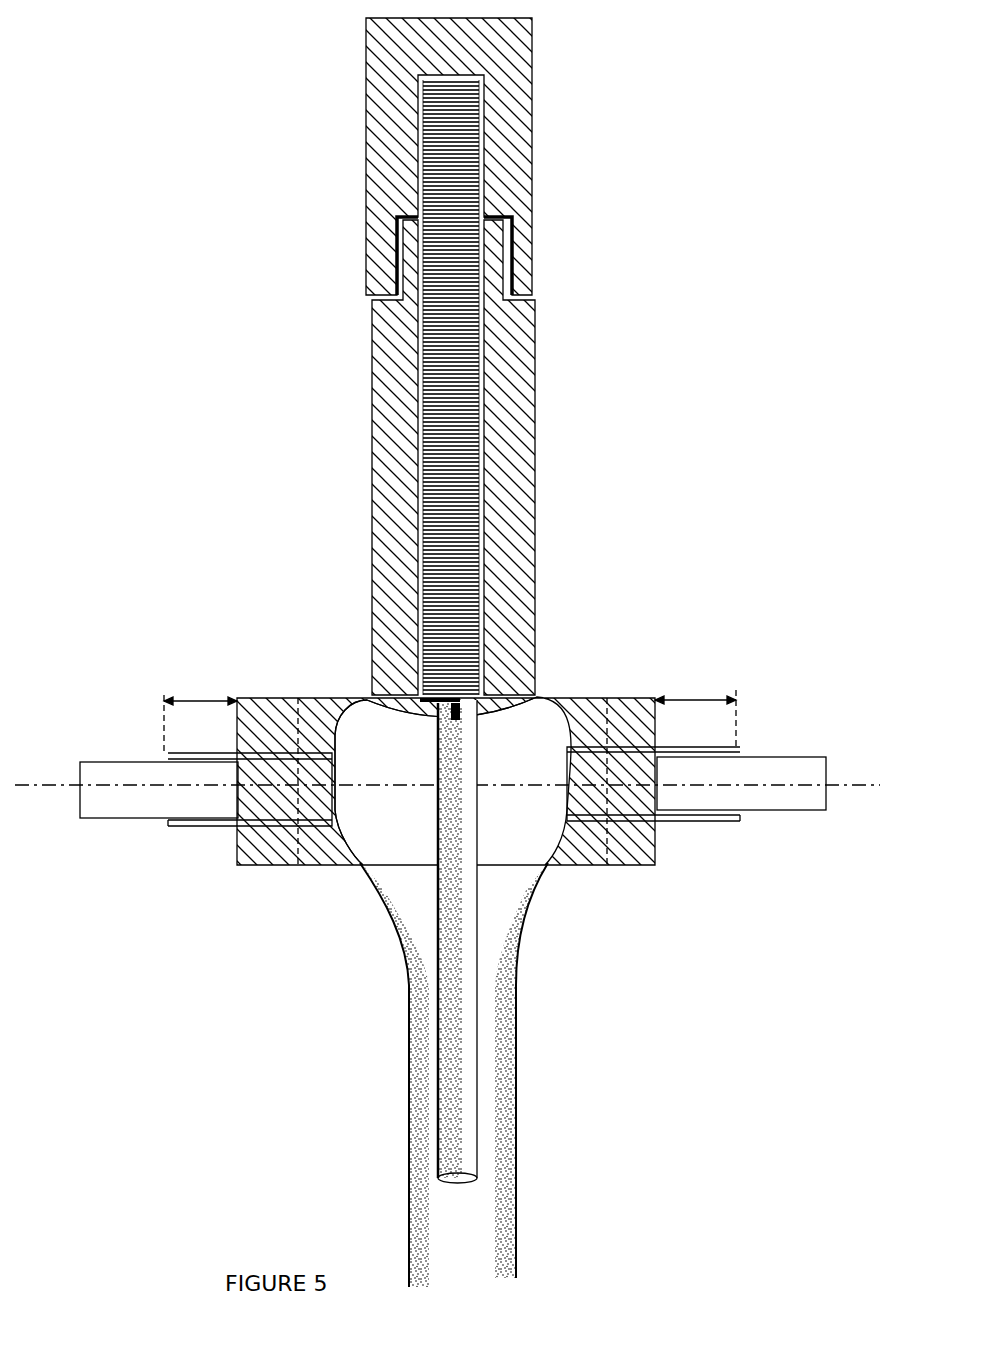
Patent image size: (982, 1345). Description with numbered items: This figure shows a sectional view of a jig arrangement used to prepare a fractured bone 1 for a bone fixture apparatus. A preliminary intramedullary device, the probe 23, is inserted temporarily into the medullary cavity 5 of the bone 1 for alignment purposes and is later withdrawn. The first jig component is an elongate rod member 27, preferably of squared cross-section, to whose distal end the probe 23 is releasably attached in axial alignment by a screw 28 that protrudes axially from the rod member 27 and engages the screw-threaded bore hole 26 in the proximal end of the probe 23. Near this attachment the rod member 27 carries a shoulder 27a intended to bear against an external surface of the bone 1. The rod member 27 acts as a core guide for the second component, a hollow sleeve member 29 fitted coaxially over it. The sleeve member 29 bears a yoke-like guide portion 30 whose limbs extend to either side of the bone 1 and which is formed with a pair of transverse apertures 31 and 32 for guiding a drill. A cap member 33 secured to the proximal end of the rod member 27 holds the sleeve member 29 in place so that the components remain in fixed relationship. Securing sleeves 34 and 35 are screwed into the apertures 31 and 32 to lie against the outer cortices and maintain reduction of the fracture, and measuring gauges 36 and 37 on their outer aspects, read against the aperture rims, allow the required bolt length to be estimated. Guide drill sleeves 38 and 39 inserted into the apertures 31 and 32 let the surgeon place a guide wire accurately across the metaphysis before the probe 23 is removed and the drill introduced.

The bone 1 is at (498, 1215).
The medullary cavity 5 is at (485, 983).
The probe 23 is at (462, 1045).
The bore hole 26 is at (340, 696).
The rod member 27 is at (476, 381).
The shoulder 27a is at (437, 697).
The screw 28 is at (537, 693).
The sleeve member 29 is at (520, 520).
The guide portion 30 is at (599, 862).
The aperture 31 is at (633, 831).
The aperture 32 is at (272, 827).
The cap member 33 is at (518, 140).
The securing sleeve 34 is at (728, 827).
The securing sleeve 35 is at (172, 827).
The measuring gauge 36 is at (701, 692).
The measuring gauge 37 is at (193, 695).
The guide drill sleeve 38 is at (794, 769).
The guide drill sleeve 39 is at (112, 770).